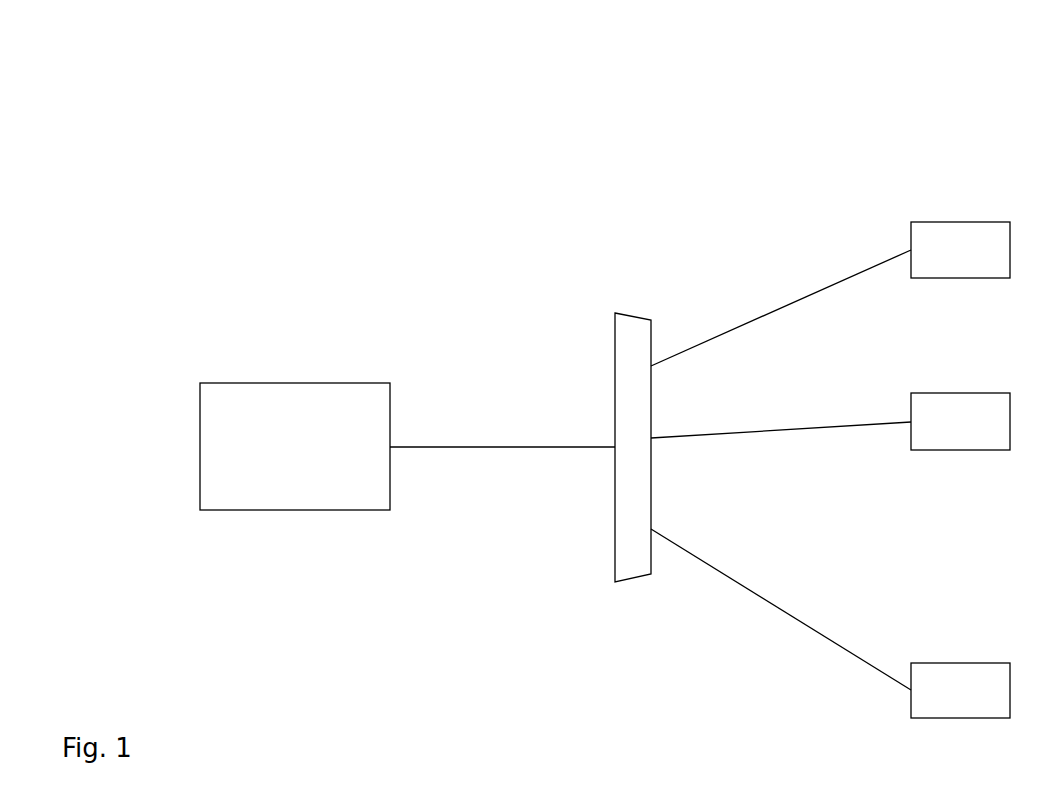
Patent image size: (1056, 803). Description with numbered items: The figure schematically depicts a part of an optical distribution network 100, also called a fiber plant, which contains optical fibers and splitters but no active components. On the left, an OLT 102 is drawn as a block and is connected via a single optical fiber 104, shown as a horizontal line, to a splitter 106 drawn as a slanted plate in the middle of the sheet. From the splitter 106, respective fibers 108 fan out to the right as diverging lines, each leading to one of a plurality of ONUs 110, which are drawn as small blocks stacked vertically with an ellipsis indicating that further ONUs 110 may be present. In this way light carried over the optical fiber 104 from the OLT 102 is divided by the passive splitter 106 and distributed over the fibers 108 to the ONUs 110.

The optical distribution network 100 is at (409, 94).
The OLT 102 is at (215, 388).
The optical fiber 104 is at (486, 448).
The splitter 106 is at (636, 327).
The fibers 108 is at (783, 305).
The ONUs 110 is at (972, 228).